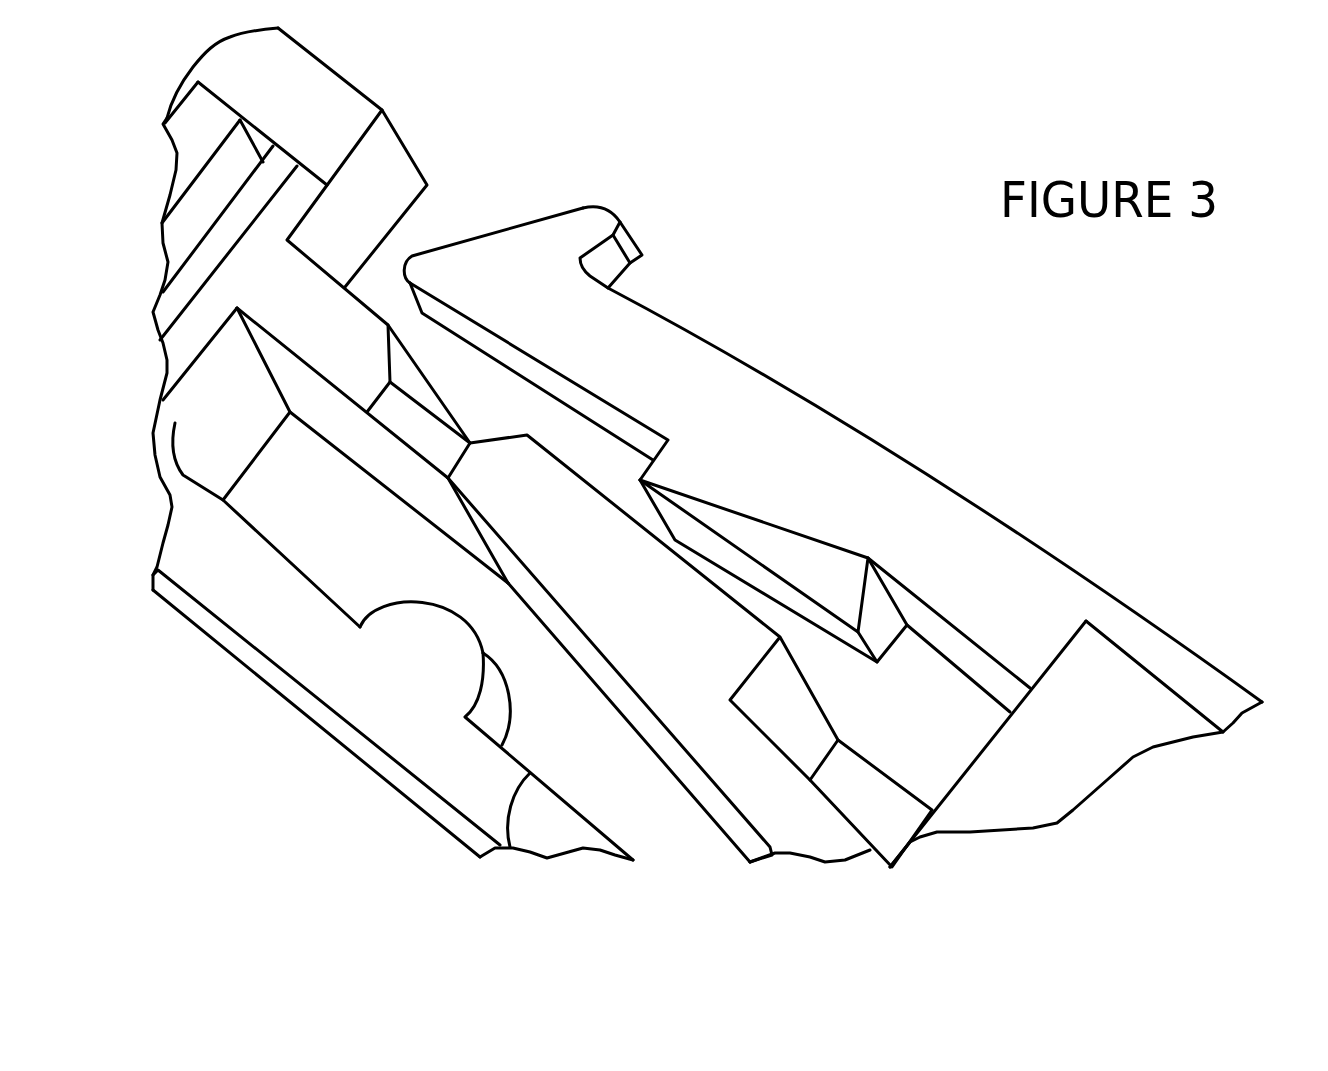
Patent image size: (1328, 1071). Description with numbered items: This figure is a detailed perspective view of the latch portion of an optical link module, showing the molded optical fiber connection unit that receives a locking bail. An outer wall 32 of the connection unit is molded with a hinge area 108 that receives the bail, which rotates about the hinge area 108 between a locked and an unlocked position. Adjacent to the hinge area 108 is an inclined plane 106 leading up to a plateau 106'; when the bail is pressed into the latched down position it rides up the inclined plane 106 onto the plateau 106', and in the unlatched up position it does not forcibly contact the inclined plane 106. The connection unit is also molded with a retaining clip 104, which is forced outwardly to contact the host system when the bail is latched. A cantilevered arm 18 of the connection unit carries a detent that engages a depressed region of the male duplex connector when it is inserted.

The cantilevered arm 18 is at (322, 651).
The outer wall 32 is at (648, 629).
The retaining clip 104 is at (740, 400).
The inclined plane 106 is at (835, 583).
The plateau 106' is at (825, 602).
The hinge area 108 is at (413, 433).